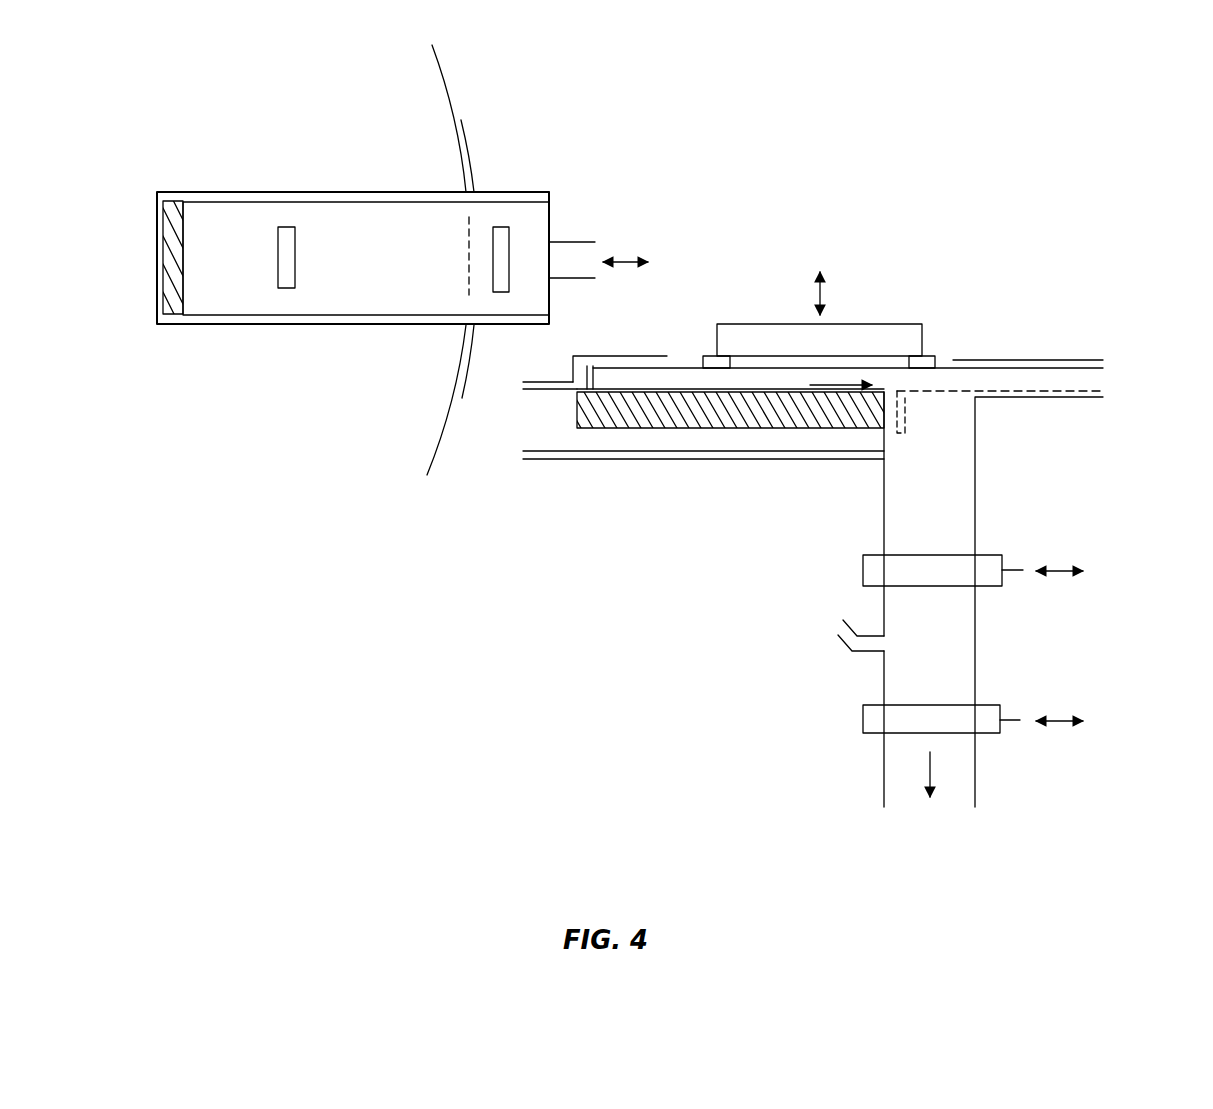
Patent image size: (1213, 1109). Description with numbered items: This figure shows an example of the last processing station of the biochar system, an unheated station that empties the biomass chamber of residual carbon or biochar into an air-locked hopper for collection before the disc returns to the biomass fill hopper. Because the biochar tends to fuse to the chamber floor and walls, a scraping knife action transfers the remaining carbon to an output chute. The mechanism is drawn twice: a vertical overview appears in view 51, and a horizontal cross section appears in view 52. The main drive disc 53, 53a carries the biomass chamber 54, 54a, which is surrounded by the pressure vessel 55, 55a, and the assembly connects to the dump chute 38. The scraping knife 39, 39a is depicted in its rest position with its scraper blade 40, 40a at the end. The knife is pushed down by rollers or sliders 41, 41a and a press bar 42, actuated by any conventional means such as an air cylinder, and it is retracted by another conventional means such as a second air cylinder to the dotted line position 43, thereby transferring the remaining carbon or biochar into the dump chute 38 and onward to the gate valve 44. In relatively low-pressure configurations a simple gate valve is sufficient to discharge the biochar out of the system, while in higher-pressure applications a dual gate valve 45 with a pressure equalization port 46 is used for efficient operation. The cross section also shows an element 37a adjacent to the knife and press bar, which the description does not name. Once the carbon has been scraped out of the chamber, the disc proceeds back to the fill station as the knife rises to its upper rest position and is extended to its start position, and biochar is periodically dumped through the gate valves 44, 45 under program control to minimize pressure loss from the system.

The plate 37a is at (650, 345).
The dump chute 38 is at (1000, 470).
The scraping knife 39 is at (252, 217).
The scraping knife 39a is at (820, 363).
The scraper blade 40 is at (168, 197).
The scraper blade 40a is at (583, 340).
The rollers or sliders 41 is at (277, 257).
The rollers or sliders 41a is at (733, 352).
The press bar 42 is at (903, 298).
The dotted line position 43 is at (1107, 390).
The gate valve 44 is at (1018, 553).
The dual gate valve 45 is at (1015, 703).
The pressure equalization port 46 is at (828, 624).
The view 51 is at (585, 220).
The view 52 is at (1035, 348).
The main drive disc 53 is at (447, 75).
The main drive disc 53a is at (627, 437).
The biomass chamber 54 is at (337, 190).
The biomass chamber 54a is at (722, 420).
The pressure vessel 55 is at (512, 192).
The pressure vessel 55a is at (822, 467).